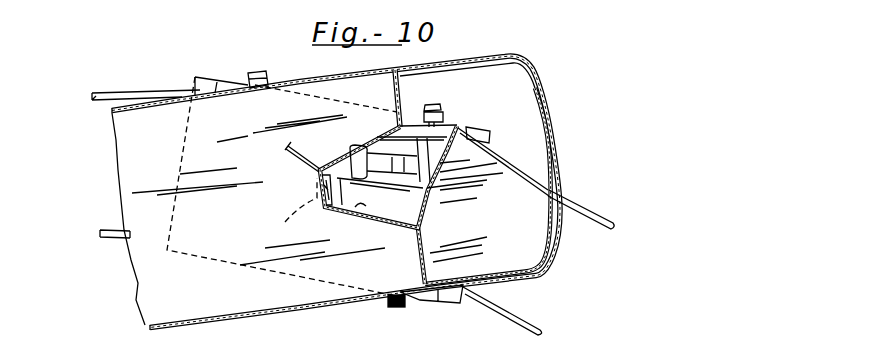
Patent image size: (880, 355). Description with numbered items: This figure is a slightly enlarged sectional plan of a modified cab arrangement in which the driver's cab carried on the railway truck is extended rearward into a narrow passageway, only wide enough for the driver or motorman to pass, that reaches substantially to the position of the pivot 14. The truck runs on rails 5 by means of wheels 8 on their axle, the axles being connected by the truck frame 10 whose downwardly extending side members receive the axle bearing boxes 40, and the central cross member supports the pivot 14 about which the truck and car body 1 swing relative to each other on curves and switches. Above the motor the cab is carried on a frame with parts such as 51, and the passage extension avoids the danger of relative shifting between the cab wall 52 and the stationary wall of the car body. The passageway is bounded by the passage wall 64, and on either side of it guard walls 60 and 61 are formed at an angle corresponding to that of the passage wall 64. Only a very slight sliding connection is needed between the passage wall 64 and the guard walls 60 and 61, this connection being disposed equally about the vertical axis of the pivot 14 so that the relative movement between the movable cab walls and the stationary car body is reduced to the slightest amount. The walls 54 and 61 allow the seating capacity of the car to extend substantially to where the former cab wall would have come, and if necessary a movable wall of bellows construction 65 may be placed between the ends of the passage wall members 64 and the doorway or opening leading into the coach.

The car body 1 is at (281, 309).
The rails 5 is at (135, 93).
The wheels 8 is at (403, 142).
The frame 10 is at (233, 69).
The pivot 14 is at (296, 208).
The axle bearing boxes 40 is at (437, 107).
The frame part 51 is at (521, 170).
The wall 52 is at (432, 234).
The wall 54 is at (415, 261).
The guard wall 60 is at (365, 140).
The guard wall 61 is at (393, 229).
The passage wall 64 is at (358, 213).
The movable wall of bellows construction 65 is at (347, 153).